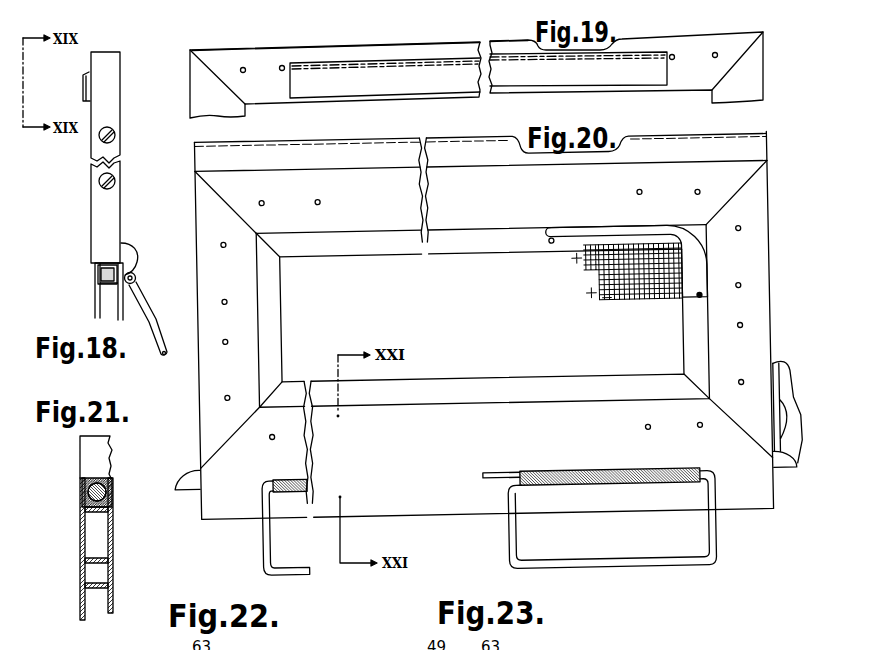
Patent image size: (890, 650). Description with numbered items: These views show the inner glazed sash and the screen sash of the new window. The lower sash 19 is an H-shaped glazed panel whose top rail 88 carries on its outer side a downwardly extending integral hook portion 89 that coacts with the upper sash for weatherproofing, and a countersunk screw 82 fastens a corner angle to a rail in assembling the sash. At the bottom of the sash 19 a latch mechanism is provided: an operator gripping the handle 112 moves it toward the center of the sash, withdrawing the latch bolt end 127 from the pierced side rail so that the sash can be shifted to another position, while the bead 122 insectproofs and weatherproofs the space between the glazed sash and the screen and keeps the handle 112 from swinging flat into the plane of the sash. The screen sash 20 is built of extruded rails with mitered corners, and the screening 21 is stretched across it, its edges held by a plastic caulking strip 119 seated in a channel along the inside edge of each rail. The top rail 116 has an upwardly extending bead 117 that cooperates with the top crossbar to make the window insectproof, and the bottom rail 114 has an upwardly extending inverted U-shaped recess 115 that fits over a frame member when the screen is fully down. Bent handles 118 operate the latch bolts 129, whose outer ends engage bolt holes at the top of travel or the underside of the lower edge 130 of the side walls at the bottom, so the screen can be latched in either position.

In FIG. 18, the lower sash 19 is at (91, 218).
In FIG. 19, the lower sash 19 is at (420, 101).
In FIG. 18, the countersunk screw 82 is at (99, 178).
In FIG. 18, the hook portion 89 is at (82, 93).
In FIG. 19, the hook portion 89 is at (339, 86).
In FIG. 18, the bead 122 is at (131, 250).
In FIG. 18, the latch bolt end 127 is at (104, 278).
In FIG. 18, the handle 112 is at (156, 307).
In FIG. 19, the top rail 88 is at (316, 47).
In FIG. 20, the bead 117 is at (284, 144).
In FIG. 20, the top rail 116 is at (521, 206).
In FIG. 20, the bottom rail 114 is at (497, 434).
In FIG. 21, the plastic caulking strip 119 is at (111, 494).
In FIG. 20, the plastic caulking strip 119 is at (604, 233).
In FIG. 21, the screening 21 is at (113, 443).
In FIG. 20, the screening 21 is at (619, 265).
In FIG. 20, the screen sash 20 is at (430, 331).
In FIG. 20, the bent handle 118 is at (277, 569).
In FIG. 21, the latch bolt 129 is at (102, 572).
In FIG. 20, the latch bolt 129 is at (185, 486).
In FIG. 20, the lower edge 130 is at (780, 413).
In FIG. 21, the inverted U-shaped recess 115 is at (97, 603).